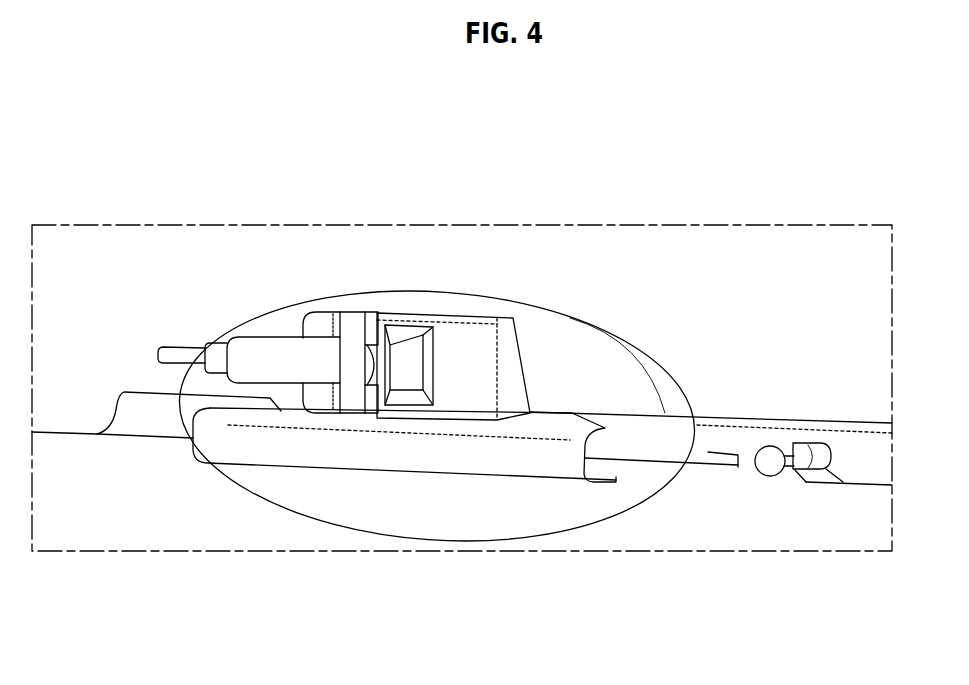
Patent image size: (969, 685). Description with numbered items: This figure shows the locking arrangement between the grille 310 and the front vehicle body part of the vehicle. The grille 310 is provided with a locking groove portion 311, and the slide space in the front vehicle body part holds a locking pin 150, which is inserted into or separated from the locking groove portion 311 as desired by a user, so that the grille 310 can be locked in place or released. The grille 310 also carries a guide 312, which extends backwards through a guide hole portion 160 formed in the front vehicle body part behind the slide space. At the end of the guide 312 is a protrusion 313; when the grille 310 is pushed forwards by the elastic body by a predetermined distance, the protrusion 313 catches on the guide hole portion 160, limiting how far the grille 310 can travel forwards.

The locking pin 150 is at (277, 365).
The guide hole portion 160 is at (822, 467).
The grille 310 is at (577, 365).
The locking groove portion 311 is at (468, 365).
The guide 312 is at (788, 467).
The protrusion 313 is at (770, 465).